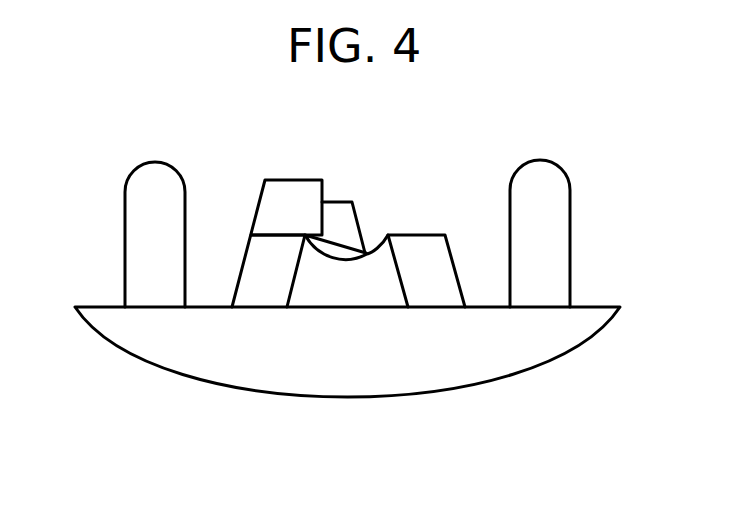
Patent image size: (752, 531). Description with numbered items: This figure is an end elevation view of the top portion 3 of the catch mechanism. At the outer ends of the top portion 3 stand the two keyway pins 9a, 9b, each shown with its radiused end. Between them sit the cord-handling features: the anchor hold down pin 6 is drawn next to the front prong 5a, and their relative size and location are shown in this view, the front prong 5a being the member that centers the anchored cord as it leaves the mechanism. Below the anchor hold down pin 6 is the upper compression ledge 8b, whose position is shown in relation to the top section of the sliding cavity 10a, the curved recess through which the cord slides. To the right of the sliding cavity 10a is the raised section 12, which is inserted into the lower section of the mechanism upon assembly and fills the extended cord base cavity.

The top portion 3 is at (150, 379).
The keyway pin 9a is at (130, 174).
The keyway pin 9b is at (565, 173).
The anchor hold down pin 6 is at (278, 193).
The upper compression ledge 8b is at (279, 238).
The front prong 5a is at (344, 196).
The sliding cavity 10a is at (368, 252).
The raised section 12 is at (440, 258).